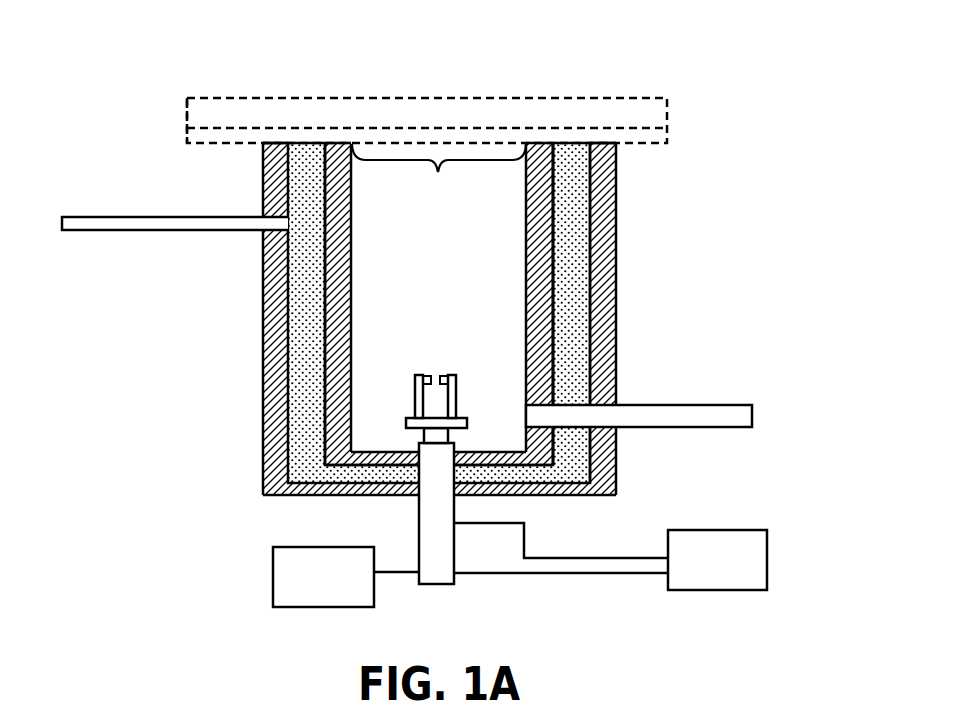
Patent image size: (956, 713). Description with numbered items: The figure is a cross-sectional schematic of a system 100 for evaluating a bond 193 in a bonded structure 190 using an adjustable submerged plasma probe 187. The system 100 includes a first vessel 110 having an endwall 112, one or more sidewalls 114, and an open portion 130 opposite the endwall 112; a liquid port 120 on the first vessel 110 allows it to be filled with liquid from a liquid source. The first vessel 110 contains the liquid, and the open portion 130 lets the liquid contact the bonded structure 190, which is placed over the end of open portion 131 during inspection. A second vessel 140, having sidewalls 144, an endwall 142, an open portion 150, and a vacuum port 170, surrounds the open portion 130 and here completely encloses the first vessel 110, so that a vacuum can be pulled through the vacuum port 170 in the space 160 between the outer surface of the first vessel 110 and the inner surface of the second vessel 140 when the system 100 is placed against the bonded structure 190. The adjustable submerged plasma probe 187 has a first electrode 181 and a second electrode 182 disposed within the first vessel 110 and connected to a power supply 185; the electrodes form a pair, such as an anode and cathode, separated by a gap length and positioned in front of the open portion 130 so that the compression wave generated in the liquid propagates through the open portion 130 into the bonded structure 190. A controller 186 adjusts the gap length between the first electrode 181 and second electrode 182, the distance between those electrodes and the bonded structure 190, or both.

The system 100 is at (447, 48).
The first vessel 110 is at (535, 142).
The endwall 112 is at (377, 457).
The sidewall 114 is at (353, 310).
The liquid port 120 is at (713, 403).
The open portion 130 is at (439, 172).
The end of open portion 131 is at (460, 140).
The second vessel 140 is at (602, 142).
The endwall 142 is at (282, 495).
The sidewall 144 is at (618, 228).
The open portion 150 is at (308, 142).
The space 160 is at (573, 348).
The vacuum port 170 is at (170, 215).
The first electrode 181 is at (427, 370).
The second electrode 182 is at (450, 368).
The power supply 185 is at (701, 572).
The controller 186 is at (306, 589).
The adjustable submerged plasma probe 187 is at (452, 588).
The bonded structure 190 is at (670, 125).
The bond 193 is at (212, 127).